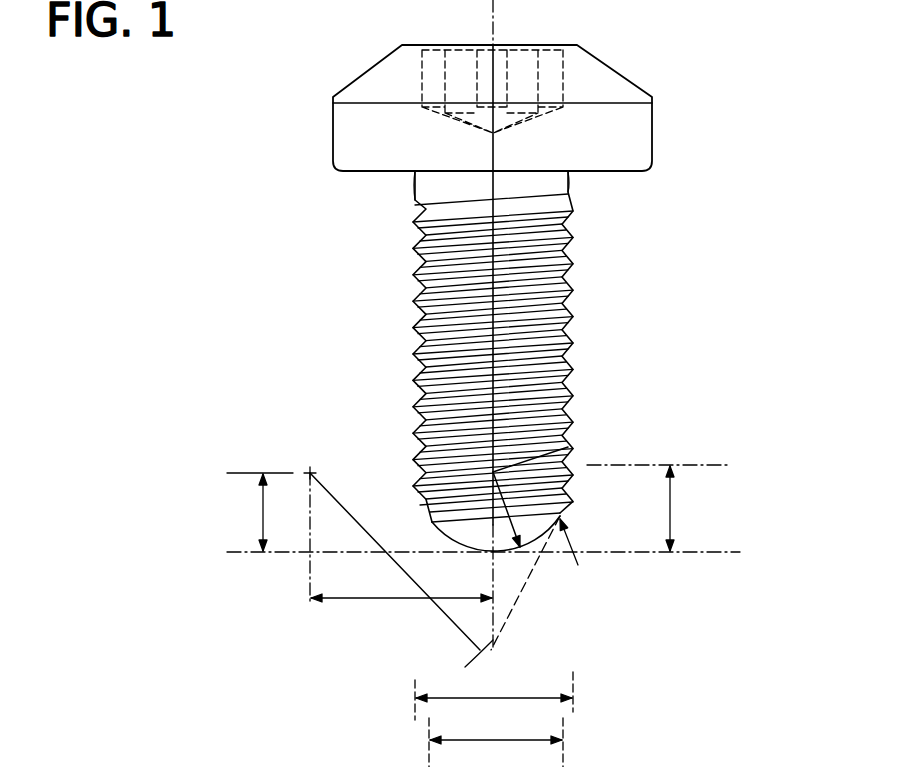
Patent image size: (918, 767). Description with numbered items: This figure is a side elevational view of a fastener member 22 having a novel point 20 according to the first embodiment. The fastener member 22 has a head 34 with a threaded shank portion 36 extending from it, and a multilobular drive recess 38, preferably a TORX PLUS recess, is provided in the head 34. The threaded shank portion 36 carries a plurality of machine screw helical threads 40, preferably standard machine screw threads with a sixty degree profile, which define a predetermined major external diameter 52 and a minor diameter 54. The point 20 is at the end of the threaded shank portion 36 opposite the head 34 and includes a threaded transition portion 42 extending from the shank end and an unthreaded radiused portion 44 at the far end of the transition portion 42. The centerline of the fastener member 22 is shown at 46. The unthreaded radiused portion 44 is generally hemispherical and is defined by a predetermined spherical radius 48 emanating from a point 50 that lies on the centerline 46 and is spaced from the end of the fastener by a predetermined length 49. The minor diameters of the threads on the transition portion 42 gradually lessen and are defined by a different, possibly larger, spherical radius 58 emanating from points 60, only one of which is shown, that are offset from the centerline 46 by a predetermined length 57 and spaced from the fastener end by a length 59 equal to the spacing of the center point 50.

The point 20 is at (579, 554).
The fastener member 22 is at (668, 340).
The head 34 is at (342, 137).
The threaded shank portion 36 is at (424, 313).
The multilobular drive recess 38 is at (552, 46).
The machine screw helical threads 40 is at (557, 235).
The threaded transition portion 42 is at (418, 507).
The unthreaded radiused portion 44 is at (486, 540).
The centerline 46 is at (493, 610).
The spherical radius 48 is at (520, 547).
The length 49 is at (657, 508).
The point 50 is at (570, 447).
The major external diameter 52 is at (525, 697).
The minor diameter 54 is at (485, 740).
The length 57 is at (371, 600).
The spherical radius 58 is at (372, 540).
The length 59 is at (262, 512).
The points 60 is at (313, 473).